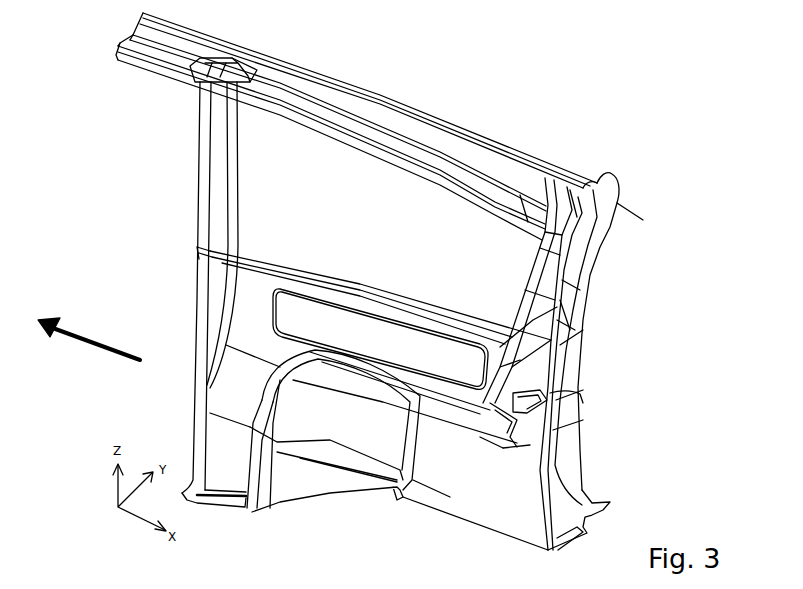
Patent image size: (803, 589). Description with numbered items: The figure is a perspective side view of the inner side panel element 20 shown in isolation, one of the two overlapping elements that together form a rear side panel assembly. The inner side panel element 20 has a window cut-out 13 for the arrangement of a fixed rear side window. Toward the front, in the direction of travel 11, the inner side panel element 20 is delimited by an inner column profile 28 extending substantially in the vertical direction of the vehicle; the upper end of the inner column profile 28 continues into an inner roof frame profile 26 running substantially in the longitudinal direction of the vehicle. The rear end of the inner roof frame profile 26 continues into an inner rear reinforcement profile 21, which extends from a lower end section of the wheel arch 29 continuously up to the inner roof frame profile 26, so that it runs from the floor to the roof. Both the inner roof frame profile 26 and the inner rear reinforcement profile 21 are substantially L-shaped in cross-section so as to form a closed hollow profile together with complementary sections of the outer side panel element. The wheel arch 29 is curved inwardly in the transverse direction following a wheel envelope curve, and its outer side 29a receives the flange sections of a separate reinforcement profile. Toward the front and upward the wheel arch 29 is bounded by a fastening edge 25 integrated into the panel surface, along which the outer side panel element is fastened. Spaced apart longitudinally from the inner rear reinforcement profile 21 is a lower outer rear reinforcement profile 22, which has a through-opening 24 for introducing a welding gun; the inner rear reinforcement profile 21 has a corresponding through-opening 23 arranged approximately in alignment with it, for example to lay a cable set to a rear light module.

The inner side panel element 20 is at (548, 97).
The window cut-out 13 is at (343, 221).
The inner roof frame profile 26 is at (453, 147).
The inner column profile 28 is at (207, 192).
The inner rear reinforcement profile 21 is at (540, 303).
The lower outer rear reinforcement profile 22 is at (553, 428).
The through-opening 23 is at (523, 423).
The through-opening 24 is at (551, 399).
The fastening edge 25 is at (277, 398).
The wheel arch 29 is at (453, 497).
The outer side of the wheel arch 29a is at (363, 470).
The direction of travel 11 is at (82, 338).